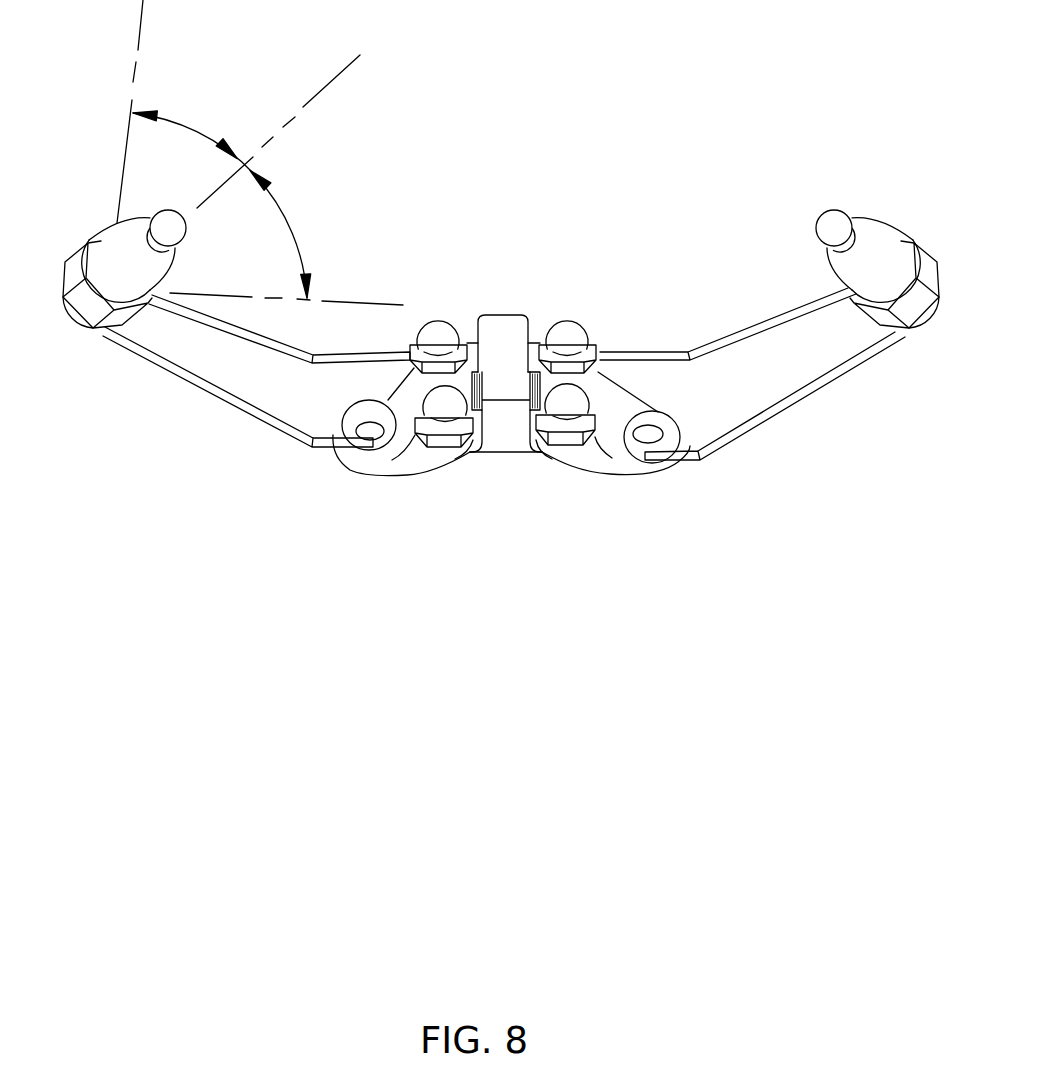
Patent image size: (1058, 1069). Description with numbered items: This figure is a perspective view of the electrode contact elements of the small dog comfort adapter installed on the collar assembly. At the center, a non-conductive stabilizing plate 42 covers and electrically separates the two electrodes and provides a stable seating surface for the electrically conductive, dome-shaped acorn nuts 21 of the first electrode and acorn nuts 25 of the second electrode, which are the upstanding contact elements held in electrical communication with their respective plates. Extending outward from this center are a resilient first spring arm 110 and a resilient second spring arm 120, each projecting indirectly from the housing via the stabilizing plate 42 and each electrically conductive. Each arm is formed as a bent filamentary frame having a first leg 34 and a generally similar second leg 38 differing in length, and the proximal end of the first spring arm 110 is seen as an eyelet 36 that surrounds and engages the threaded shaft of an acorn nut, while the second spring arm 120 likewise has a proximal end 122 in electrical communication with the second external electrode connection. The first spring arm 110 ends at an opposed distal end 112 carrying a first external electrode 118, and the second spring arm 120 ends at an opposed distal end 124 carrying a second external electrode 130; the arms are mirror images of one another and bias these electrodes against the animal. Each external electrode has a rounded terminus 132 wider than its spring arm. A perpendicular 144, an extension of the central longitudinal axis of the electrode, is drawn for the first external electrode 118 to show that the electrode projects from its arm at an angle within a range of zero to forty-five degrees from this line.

The first spring arm 110 is at (165, 437).
The opposed distal end 112 is at (72, 215).
The first external electrode 118 is at (97, 348).
The second spring arm 120 is at (803, 447).
The proximal end 122 is at (543, 223).
The opposed distal end 124 is at (915, 365).
The second external electrode 130 is at (842, 162).
The rounded terminus 132 is at (180, 232).
The perpendicular 144 is at (335, 78).
The acorn nuts 21 is at (567, 330).
The acorn nuts 25 is at (438, 328).
The first leg 34 is at (235, 338).
The eyelet 36 is at (370, 443).
The second leg 38 is at (247, 410).
The stabilizing plate 42 is at (503, 452).